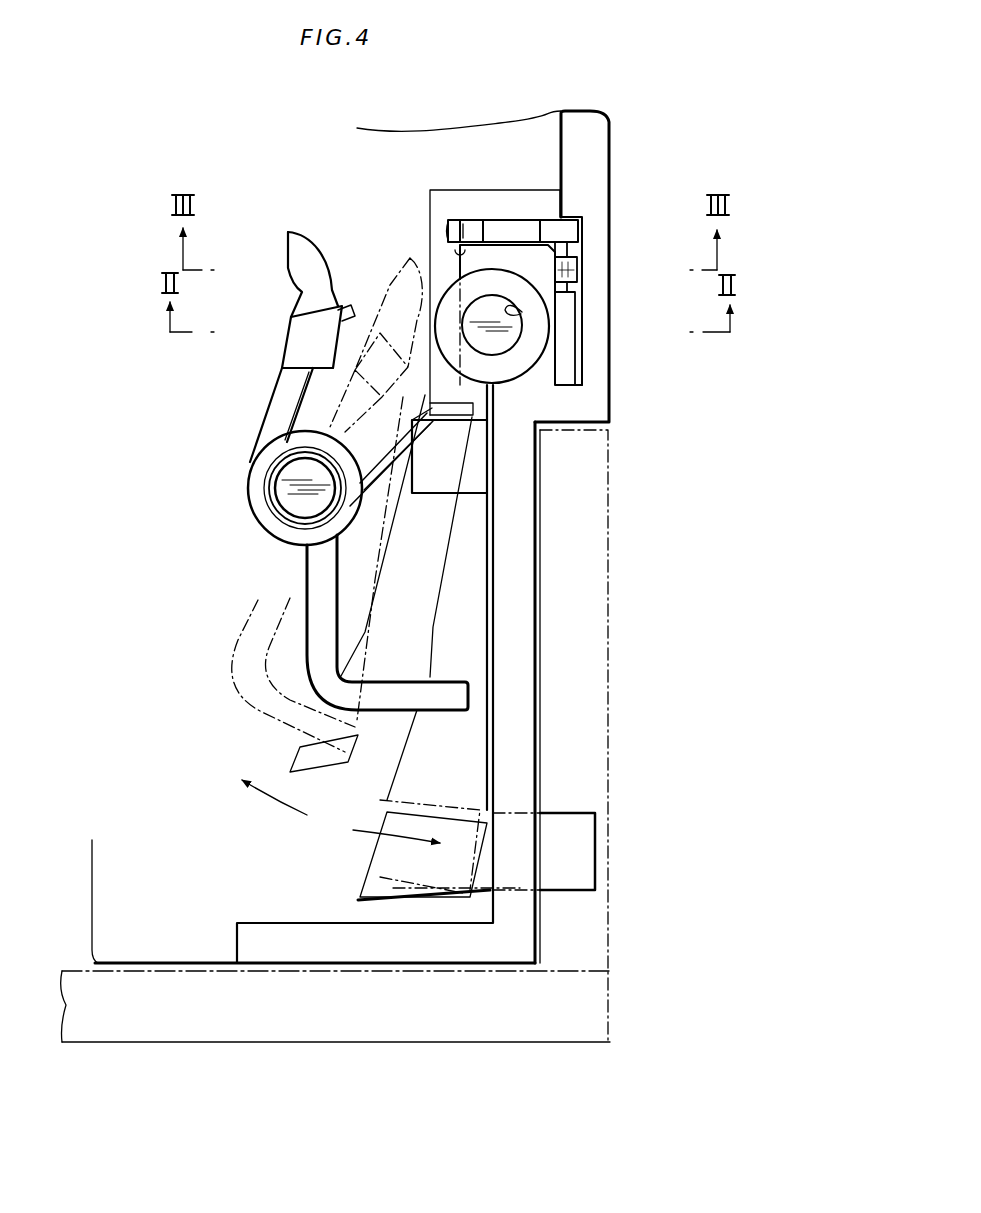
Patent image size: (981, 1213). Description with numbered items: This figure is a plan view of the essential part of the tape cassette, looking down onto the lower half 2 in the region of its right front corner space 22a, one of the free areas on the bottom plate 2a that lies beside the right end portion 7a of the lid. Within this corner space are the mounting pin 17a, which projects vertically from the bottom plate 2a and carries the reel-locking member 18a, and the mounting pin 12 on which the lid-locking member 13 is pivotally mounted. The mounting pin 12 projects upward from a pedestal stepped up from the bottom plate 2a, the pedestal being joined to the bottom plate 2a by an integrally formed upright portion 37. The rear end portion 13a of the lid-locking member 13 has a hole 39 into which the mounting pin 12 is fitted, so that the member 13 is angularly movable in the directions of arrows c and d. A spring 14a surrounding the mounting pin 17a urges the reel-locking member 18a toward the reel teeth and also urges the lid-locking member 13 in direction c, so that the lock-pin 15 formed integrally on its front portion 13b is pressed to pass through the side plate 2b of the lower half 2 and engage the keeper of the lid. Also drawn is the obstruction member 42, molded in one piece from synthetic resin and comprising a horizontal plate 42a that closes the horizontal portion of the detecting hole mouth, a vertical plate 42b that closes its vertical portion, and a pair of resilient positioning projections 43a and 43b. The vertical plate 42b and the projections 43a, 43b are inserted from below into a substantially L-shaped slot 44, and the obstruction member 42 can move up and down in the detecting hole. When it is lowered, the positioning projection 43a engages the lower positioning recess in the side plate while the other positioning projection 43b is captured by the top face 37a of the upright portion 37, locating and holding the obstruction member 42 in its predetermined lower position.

The lower half 2 is at (120, 965).
The bottom plate 2a is at (100, 893).
The side plate 2b is at (585, 147).
The right end portion of the lid 7a is at (585, 715).
The mounting pin 12 is at (515, 330).
The lid-locking member 13 is at (427, 610).
The rear end portion 13a is at (440, 320).
The front portion 13b is at (308, 817).
The spring 14a is at (287, 437).
The lock-pin 15 is at (577, 845).
The mounting pin 17a is at (296, 492).
The reel-locking member 18a is at (303, 288).
The right front corner space 22a is at (192, 667).
The upright portion 37 is at (427, 203).
The top face of the upright portion 37a is at (460, 245).
The hole 39 is at (510, 306).
The obstruction member 42 is at (513, 222).
The horizontal plate 42a is at (543, 375).
The vertical plate 42b is at (565, 370).
The positioning projection 43a is at (566, 268).
The positioning projection 43b is at (447, 228).
The L-shaped slot 44 is at (456, 252).
The arrow c is at (383, 823).
The arrow d is at (300, 805).